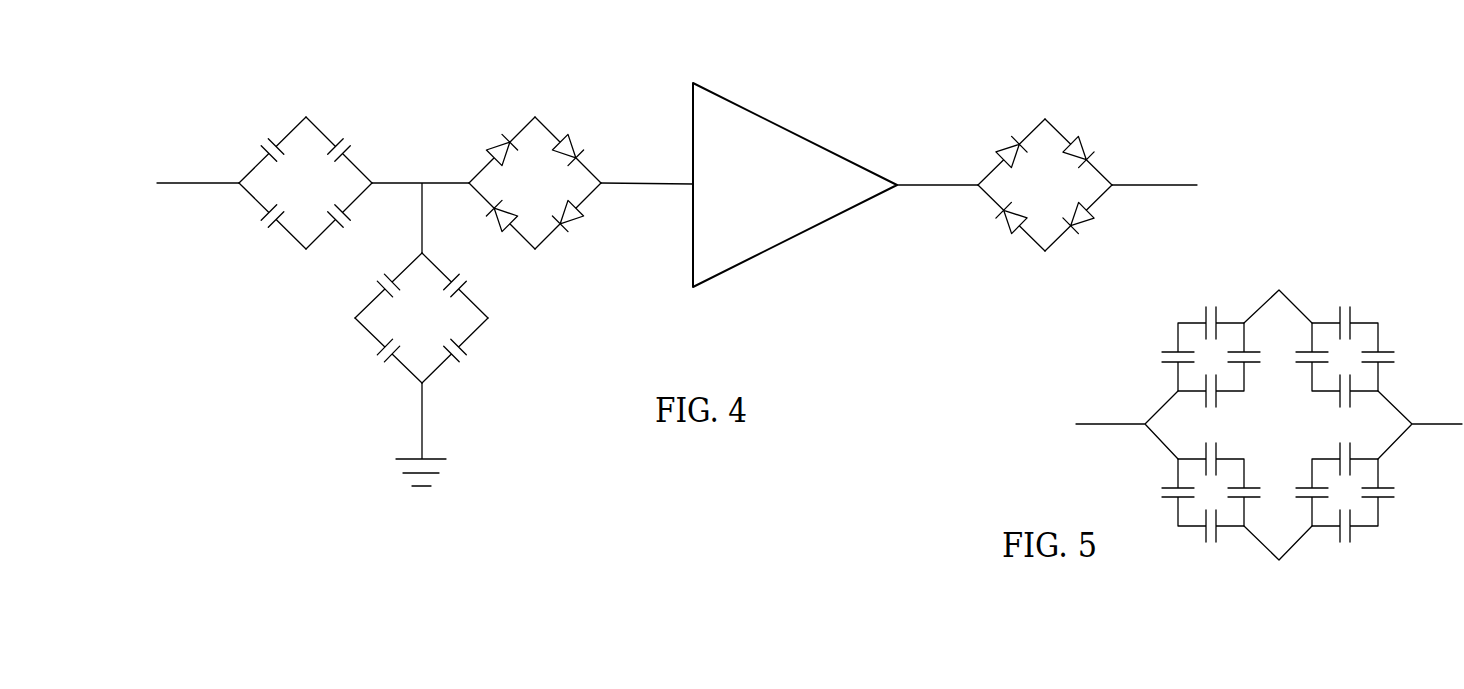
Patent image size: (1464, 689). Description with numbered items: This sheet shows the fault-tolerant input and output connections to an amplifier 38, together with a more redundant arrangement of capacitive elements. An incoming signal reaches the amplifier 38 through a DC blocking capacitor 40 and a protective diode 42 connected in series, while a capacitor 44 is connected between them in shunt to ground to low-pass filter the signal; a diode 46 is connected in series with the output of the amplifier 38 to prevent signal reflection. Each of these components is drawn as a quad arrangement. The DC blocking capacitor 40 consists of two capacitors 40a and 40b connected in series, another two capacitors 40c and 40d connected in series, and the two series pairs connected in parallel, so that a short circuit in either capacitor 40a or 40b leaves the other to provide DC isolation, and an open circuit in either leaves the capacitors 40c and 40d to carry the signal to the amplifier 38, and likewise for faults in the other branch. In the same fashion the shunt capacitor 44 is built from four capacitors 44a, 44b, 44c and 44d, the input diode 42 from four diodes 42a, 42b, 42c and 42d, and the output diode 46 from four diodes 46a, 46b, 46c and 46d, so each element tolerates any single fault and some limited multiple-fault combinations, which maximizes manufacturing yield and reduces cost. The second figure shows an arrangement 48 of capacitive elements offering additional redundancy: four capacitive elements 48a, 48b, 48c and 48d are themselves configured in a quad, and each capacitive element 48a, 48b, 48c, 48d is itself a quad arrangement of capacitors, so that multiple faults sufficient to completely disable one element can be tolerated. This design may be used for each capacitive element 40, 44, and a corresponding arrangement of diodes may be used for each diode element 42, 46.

In FIG. 4, the amplifier 38 is at (770, 196).
In FIG. 4, the capacitor 40 is at (303, 145).
In FIG. 4, the capacitor 40a is at (259, 148).
In FIG. 4, the capacitor 40b is at (350, 149).
In FIG. 4, the capacitor 40c is at (258, 218).
In FIG. 4, the capacitor 40d is at (351, 216).
In FIG. 4, the diode 42 is at (539, 161).
In FIG. 4, the diode 42a is at (494, 146).
In FIG. 4, the diode 42b is at (561, 138).
In FIG. 4, the diode 42c is at (495, 217).
In FIG. 4, the diode 42d is at (570, 225).
In FIG. 4, the capacitor 44 is at (421, 349).
In FIG. 4, the capacitor 44a is at (377, 284).
In FIG. 4, the capacitor 44b is at (466, 285).
In FIG. 4, the capacitor 44c is at (374, 354).
In FIG. 4, the capacitor 44d is at (471, 381).
In FIG. 4, the diode 46 is at (1050, 162).
In FIG. 4, the diode 46a is at (1002, 150).
In FIG. 4, the diode 46b is at (1066, 138).
In FIG. 4, the diode 46c is at (1003, 219).
In FIG. 4, the diode 46d is at (1080, 227).
In FIG. 5, the arrangement of capacitive elements 48 is at (1241, 417).
In FIG. 5, the capacitive element 48a is at (1194, 322).
In FIG. 5, the capacitive element 48b is at (1371, 321).
In FIG. 5, the capacitive element 48c is at (1176, 508).
In FIG. 5, the capacitive element 48d is at (1381, 475).